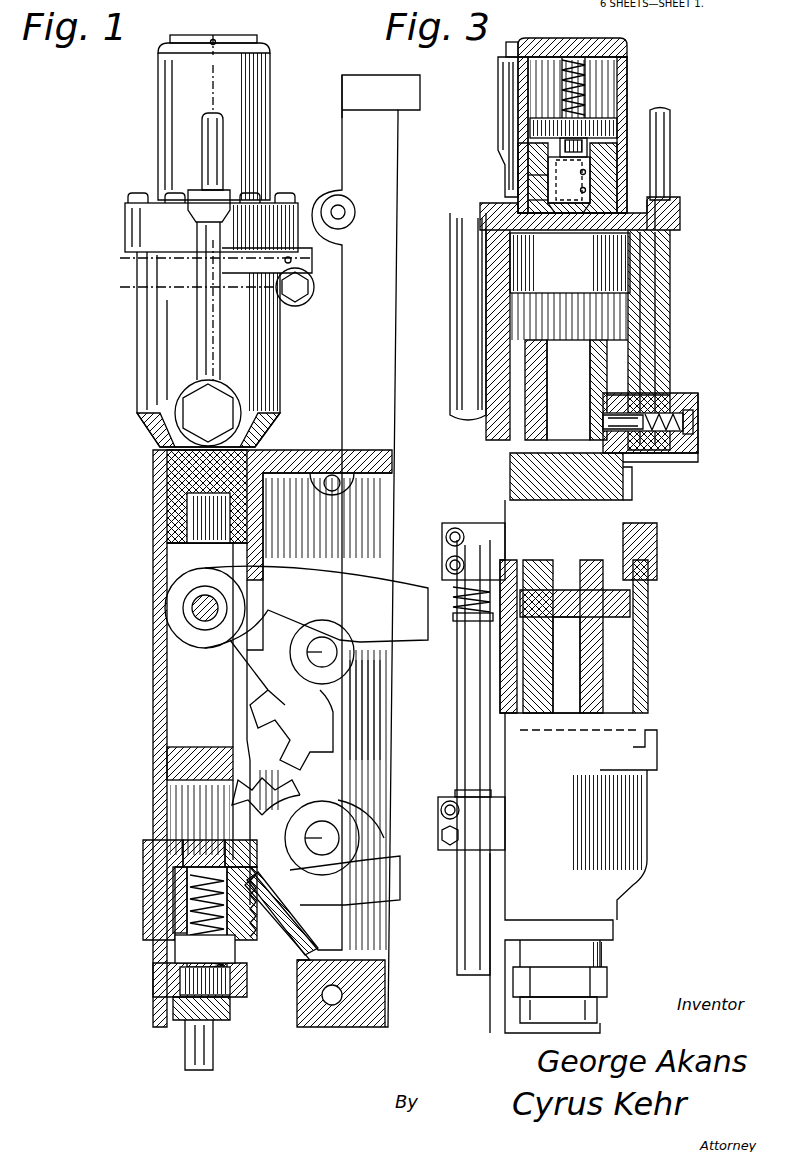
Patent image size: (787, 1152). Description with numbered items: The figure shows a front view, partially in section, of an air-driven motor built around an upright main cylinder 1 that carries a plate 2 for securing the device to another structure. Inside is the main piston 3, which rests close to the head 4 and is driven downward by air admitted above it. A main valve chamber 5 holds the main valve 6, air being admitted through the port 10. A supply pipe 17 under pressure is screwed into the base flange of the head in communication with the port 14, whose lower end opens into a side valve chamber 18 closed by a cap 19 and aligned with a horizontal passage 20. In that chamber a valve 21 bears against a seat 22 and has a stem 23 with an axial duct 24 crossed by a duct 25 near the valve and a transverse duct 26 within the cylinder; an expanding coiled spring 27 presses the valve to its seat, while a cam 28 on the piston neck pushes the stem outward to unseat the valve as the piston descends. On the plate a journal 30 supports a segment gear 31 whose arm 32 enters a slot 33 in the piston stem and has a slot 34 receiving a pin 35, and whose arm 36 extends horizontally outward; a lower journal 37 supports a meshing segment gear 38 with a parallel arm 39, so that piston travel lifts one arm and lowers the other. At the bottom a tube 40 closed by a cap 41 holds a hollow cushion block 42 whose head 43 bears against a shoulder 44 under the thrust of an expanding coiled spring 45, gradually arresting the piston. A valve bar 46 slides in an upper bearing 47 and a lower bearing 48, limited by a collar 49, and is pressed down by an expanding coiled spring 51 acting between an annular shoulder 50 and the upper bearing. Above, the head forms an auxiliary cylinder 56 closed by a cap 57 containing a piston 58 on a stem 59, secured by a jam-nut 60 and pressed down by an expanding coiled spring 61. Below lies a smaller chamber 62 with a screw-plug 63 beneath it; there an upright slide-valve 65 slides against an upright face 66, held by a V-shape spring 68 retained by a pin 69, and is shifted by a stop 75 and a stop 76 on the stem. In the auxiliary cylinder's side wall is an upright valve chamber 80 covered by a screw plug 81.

In FIG. 1, the main cylinder 1 is at (160, 362).
In FIG. 3, the main cylinder 1 is at (620, 315).
In FIG. 1, the plate 2 is at (360, 402).
In FIG. 1, the main piston 3 is at (55, 508).
In FIG. 3, the main piston 3 is at (570, 286).
In FIG. 1, the head 4 is at (135, 213).
In FIG. 3, the head 4 is at (500, 222).
In FIG. 1, the main valve chamber 5 is at (120, 258).
In FIG. 3, the main valve chamber 5 is at (470, 250).
In FIG. 1, the main valve 6 is at (120, 288).
In FIG. 3, the port 10 is at (660, 294).
In FIG. 3, the port 14 is at (652, 308).
In FIG. 1, the supply pipe 17 is at (212, 135).
In FIG. 3, the supply pipe 17 is at (670, 125).
In FIG. 1, the valve chamber 18 is at (180, 430).
In FIG. 3, the valve chamber 18 is at (668, 462).
In FIG. 1, the cap 19 is at (195, 408).
In FIG. 3, the cap 19 is at (700, 420).
In FIG. 3, the horizontal passage 20 is at (627, 462).
In FIG. 3, the valve 21 is at (693, 398).
In FIG. 3, the seat 22 is at (637, 453).
In FIG. 3, the stem 23 is at (600, 412).
In FIG. 3, the axial duct 24 is at (630, 382).
In FIG. 3, the duct 25 is at (668, 387).
In FIG. 3, the transverse duct 26 is at (605, 420).
In FIG. 3, the expanding coiled spring 27 is at (700, 440).
In FIG. 3, the cam 28 is at (607, 362).
In FIG. 1, the journal 30 is at (305, 652).
In FIG. 1, the segment gear 31 is at (291, 723).
In FIG. 1, the arm 32 is at (309, 647).
In FIG. 3, the arm 32 is at (590, 632).
In FIG. 1, the slot 33 is at (257, 582).
In FIG. 3, the slot 33 is at (570, 677).
In FIG. 1, the slot 34 is at (210, 620).
In FIG. 1, the pin 35 is at (192, 606).
In FIG. 3, the pin 35 is at (635, 600).
In FIG. 1, the arm 36 is at (296, 607).
In FIG. 1, the journal 37 is at (315, 838).
In FIG. 1, the segment gear 38 is at (295, 826).
In FIG. 1, the arm 39 is at (327, 782).
In FIG. 1, the tube 40 is at (165, 947).
In FIG. 3, the tube 40 is at (597, 957).
In FIG. 1, the cap 41 is at (175, 1010).
In FIG. 3, the cap 41 is at (582, 1013).
In FIG. 1, the hollow cushion block 42 is at (180, 853).
In FIG. 1, the head 43 is at (180, 927).
In FIG. 1, the shoulder 44 is at (155, 903).
In FIG. 1, the expanding coiled spring 45 is at (195, 955).
In FIG. 1, the valve bar 46 is at (200, 1037).
In FIG. 3, the valve bar 46 is at (470, 950).
In FIG. 3, the upper bearing 47 is at (450, 553).
In FIG. 3, the lower bearing 48 is at (442, 830).
In FIG. 3, the collar 49 is at (458, 790).
In FIG. 3, the annular shoulder 50 is at (497, 612).
In FIG. 3, the expanding coiled spring 51 is at (450, 590).
In FIG. 1, the auxiliary cylinder 56 is at (172, 105).
In FIG. 3, the auxiliary cylinder 56 is at (620, 72).
In FIG. 1, the cap 57 is at (185, 44).
In FIG. 3, the cap 57 is at (615, 42).
In FIG. 3, the piston 58 is at (542, 125).
In FIG. 3, the stem 59 is at (590, 152).
In FIG. 3, the jam-nut 60 is at (548, 148).
In FIG. 3, the expanding coiled spring 61 is at (565, 78).
In FIG. 3, the chamber 62 is at (548, 163).
In FIG. 3, the screw-plug 63 is at (652, 235).
In FIG. 3, the slide-valve 65 is at (560, 182).
In FIG. 3, the upright face 66 is at (530, 206).
In FIG. 3, the V-shape spring 68 is at (590, 170).
In FIG. 3, the pin 69 is at (590, 192).
In FIG. 3, the stop 75 is at (568, 215).
In FIG. 3, the stop 76 is at (525, 183).
In FIG. 3, the upright valve chamber 80 is at (501, 68).
In FIG. 3, the screw plug 81 is at (504, 40).